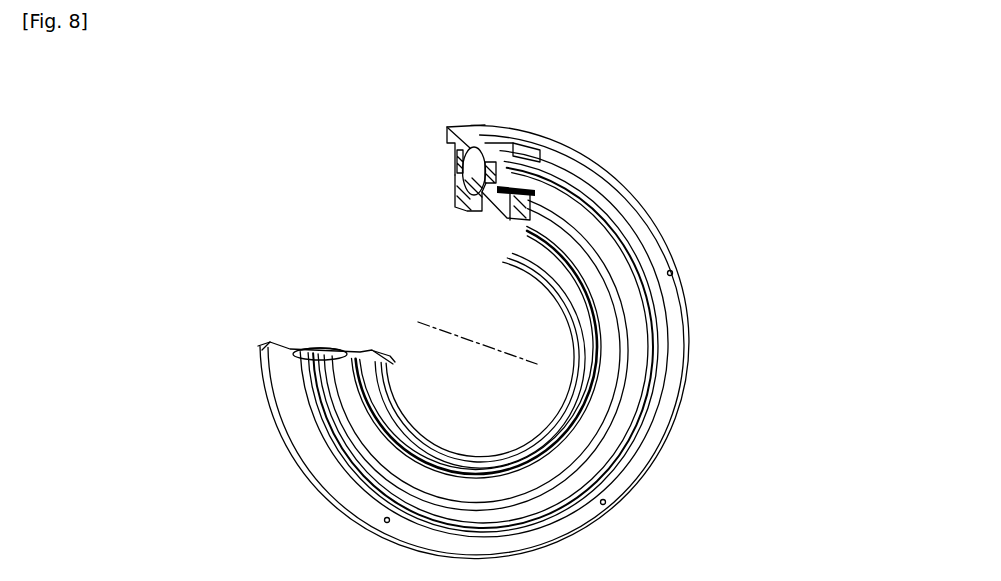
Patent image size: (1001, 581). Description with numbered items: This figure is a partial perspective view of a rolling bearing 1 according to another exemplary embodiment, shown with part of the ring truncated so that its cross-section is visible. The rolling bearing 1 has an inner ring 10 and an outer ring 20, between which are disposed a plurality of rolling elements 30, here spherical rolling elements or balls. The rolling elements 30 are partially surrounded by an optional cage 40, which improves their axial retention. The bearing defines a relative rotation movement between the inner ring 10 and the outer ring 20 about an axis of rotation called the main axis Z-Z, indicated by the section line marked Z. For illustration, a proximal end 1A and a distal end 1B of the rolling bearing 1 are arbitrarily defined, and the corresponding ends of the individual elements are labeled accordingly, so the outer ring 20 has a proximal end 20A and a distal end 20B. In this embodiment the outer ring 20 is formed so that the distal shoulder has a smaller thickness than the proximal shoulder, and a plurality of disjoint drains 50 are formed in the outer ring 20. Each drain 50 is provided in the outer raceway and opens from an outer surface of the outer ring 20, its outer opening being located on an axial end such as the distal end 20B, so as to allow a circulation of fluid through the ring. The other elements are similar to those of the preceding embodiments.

The rolling bearing 1 is at (687, 141).
The proximal end 1A is at (440, 189).
The distal end 1B is at (606, 237).
The inner ring 10 is at (492, 214).
The outer ring 20 is at (447, 128).
The proximal end of the outer ring 20A is at (447, 136).
The distal end of the outer ring 20B is at (521, 205).
The rolling elements 30 is at (470, 147).
The cage 40 is at (580, 198).
The drain 50 is at (497, 152).
The main axis Z is at (476, 344).